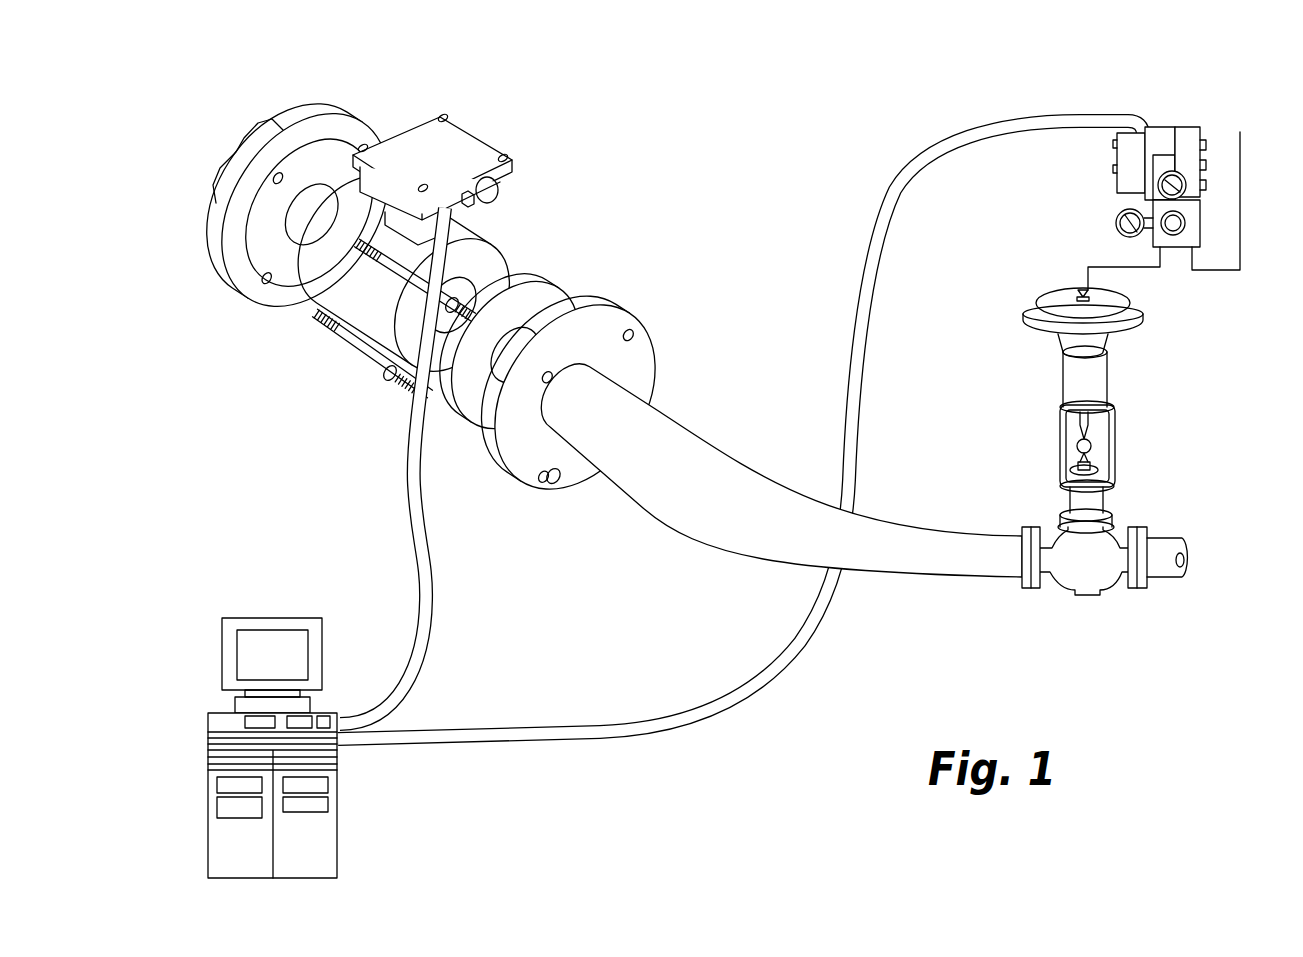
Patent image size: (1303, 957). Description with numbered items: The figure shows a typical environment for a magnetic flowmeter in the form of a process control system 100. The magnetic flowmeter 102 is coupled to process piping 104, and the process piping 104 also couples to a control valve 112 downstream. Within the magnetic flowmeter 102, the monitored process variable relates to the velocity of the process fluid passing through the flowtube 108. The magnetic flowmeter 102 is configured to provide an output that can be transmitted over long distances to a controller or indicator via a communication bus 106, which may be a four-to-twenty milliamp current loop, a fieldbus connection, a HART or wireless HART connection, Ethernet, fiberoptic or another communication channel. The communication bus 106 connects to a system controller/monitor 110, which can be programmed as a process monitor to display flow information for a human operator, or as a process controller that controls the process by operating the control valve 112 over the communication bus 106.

The process control system 100 is at (704, 210).
The magnetic flowmeter 102 is at (271, 388).
The process piping 104 is at (737, 533).
The communication bus 106 is at (422, 552).
The flowtube 108 is at (482, 258).
The system controller/monitor 110 is at (374, 785).
The control valve 112 is at (1131, 393).